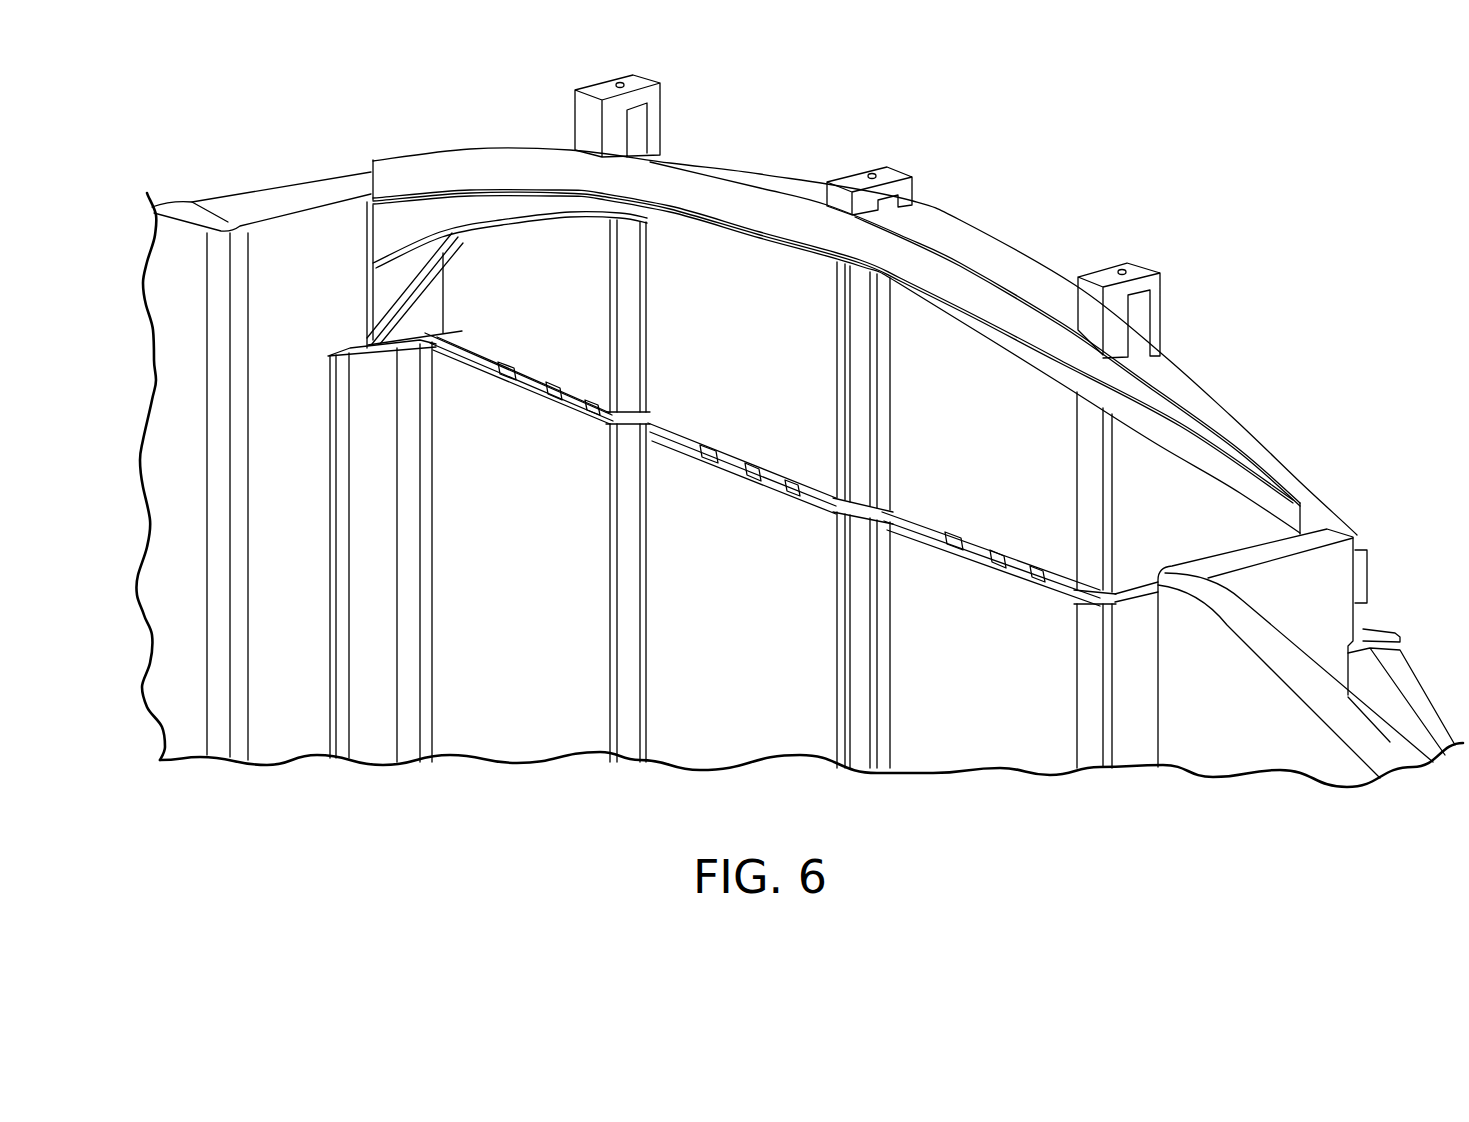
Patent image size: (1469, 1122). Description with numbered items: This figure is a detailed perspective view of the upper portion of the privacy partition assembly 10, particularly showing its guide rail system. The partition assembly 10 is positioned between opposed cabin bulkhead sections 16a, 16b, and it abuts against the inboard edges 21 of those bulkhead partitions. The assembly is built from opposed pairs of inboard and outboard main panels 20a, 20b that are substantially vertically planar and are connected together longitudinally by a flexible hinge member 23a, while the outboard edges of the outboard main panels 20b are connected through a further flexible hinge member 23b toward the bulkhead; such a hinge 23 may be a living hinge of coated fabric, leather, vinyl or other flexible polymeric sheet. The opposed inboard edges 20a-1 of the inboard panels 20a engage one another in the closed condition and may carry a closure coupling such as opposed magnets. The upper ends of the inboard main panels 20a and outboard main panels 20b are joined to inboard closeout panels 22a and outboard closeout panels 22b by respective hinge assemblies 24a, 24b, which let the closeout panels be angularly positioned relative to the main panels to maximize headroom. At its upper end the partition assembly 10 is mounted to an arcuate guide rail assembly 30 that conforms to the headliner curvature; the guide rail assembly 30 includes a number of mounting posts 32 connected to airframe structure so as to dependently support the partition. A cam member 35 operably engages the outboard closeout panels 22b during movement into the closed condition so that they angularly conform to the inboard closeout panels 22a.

The partition assembly 10 is at (520, 745).
The cabin bulkhead section 16a is at (1285, 728).
The cabin bulkhead section 16b is at (162, 457).
The inboard edge 21 is at (282, 580).
The inboard main panel 20a is at (725, 655).
The inboard edge 20a-1 is at (860, 750).
The outboard main panel 20b is at (505, 643).
The inboard closeout panel 22a is at (738, 355).
The outboard closeout panel 22b is at (531, 306).
The flexible hinge member 23 is at (626, 578).
The flexible hinge member 23a is at (630, 746).
The flexible hinge member 23b is at (424, 745).
The hinge assembly 24a is at (740, 456).
The hinge assembly 24b is at (526, 372).
The arcuate guide rail assembly 30 is at (512, 140).
The mounting post 32 is at (645, 78).
The cam member 35 is at (380, 293).